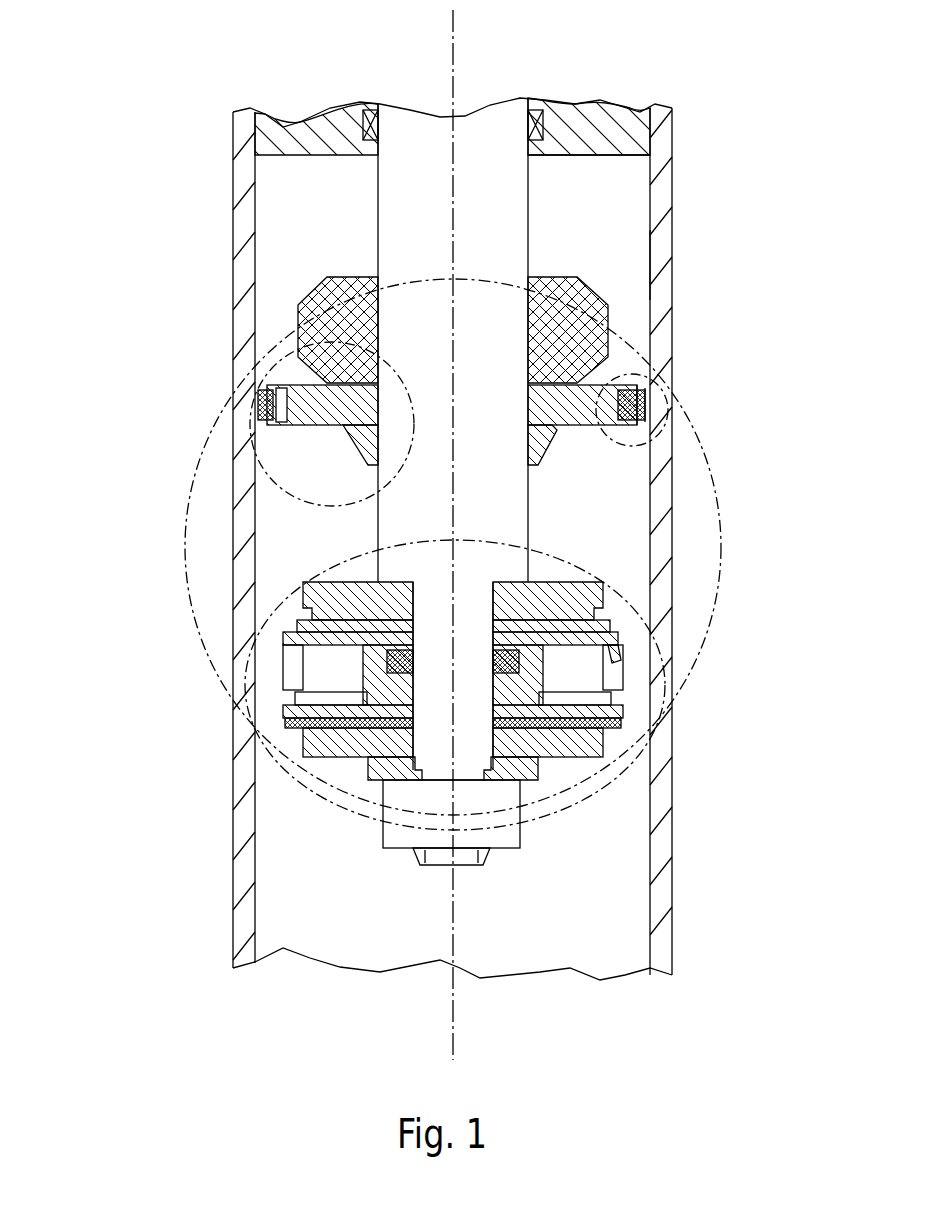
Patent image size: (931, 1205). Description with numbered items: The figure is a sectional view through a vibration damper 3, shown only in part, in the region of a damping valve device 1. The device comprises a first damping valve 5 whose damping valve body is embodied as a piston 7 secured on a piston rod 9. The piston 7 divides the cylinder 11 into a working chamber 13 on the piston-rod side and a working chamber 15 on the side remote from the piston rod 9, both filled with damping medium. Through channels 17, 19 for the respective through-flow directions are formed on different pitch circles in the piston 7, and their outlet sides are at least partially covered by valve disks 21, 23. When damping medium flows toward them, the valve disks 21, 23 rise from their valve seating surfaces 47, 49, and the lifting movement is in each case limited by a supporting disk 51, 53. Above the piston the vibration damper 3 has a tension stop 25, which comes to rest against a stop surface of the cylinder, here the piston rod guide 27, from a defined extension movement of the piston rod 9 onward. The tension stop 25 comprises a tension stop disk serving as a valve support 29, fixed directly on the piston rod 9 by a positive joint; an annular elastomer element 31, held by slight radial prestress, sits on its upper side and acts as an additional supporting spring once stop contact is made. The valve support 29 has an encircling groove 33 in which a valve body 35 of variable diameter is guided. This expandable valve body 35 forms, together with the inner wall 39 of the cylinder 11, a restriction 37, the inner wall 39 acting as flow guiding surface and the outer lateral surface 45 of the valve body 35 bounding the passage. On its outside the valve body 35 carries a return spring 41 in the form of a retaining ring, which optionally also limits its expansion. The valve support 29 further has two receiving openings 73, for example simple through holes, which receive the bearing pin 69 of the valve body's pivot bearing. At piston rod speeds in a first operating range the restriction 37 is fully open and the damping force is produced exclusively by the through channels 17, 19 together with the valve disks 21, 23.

The damping valve device 1 is at (188, 612).
The vibration damper 3 is at (150, 385).
The first damping valve 5 is at (625, 600).
The piston 7 is at (578, 677).
The piston rod 9 is at (503, 127).
The cylinder 11 is at (653, 888).
The working chamber on the piston-rod side 13 is at (600, 216).
The working chamber remote from the piston rod 15 is at (582, 935).
The through channel 17 is at (630, 685).
The through channel 19 is at (287, 663).
The valve disk 21 is at (605, 633).
The valve disk 23 is at (620, 712).
The tension stop 25 is at (256, 388).
The piston rod guide 27 is at (623, 127).
The valve support 29 is at (350, 427).
The elastomer element 31 is at (603, 310).
The groove 33 is at (607, 427).
The valve body 35 is at (655, 433).
The restriction 37 is at (637, 366).
The inner wall 39 is at (636, 270).
The return spring 41 is at (647, 391).
The outer lateral surface 45 is at (648, 413).
The valve seating surface 47 is at (612, 685).
The valve seating surface 49 is at (298, 703).
The supporting disk 51 is at (322, 581).
The supporting disk 53 is at (333, 757).
The bearing pin 69 is at (268, 410).
The receiving opening 73 is at (262, 402).